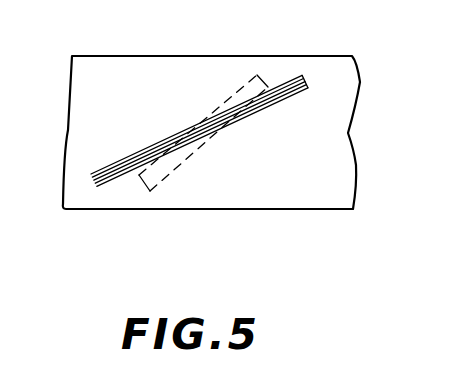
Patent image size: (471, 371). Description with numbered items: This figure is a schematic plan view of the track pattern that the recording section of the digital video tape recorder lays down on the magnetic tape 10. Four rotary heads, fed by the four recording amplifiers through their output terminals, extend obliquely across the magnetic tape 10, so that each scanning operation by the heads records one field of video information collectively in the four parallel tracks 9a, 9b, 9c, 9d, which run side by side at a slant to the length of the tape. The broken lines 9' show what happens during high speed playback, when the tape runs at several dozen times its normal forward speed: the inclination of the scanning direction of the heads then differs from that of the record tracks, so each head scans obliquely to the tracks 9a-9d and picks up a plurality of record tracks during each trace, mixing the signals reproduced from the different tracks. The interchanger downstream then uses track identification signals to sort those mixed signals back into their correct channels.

The magnetic tape 10 is at (135, 56).
The broken lines 9' is at (203, 105).
The parallel track 9a is at (296, 78).
The parallel track 9b is at (305, 82).
The parallel track 9c is at (307, 85).
The parallel track 9d is at (308, 87).